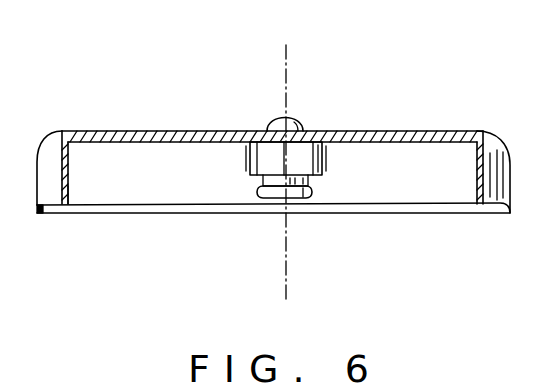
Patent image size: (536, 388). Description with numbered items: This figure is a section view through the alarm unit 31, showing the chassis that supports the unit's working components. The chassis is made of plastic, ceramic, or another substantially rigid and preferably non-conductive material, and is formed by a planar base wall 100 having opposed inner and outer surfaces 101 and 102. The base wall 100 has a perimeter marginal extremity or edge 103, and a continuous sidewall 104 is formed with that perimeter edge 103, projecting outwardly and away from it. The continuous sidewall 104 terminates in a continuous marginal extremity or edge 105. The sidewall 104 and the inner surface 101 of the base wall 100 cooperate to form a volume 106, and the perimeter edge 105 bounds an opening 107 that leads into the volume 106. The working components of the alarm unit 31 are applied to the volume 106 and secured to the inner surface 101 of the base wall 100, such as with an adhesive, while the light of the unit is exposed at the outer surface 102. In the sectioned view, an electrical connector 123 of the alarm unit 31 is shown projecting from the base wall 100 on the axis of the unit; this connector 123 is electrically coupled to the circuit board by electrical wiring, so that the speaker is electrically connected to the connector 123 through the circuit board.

The alarm unit 31 is at (450, 130).
The planar base wall 100 is at (375, 133).
The inner surface 101 is at (425, 143).
The outer surface 102 is at (413, 133).
The perimeter marginal extremity or edge 103 is at (73, 131).
The continuous sidewall 104 is at (67, 186).
The continuous marginal extremity or edge 105 is at (43, 215).
The volume 106 is at (172, 181).
The opening 107 is at (200, 197).
The electrical connector 123 is at (313, 197).